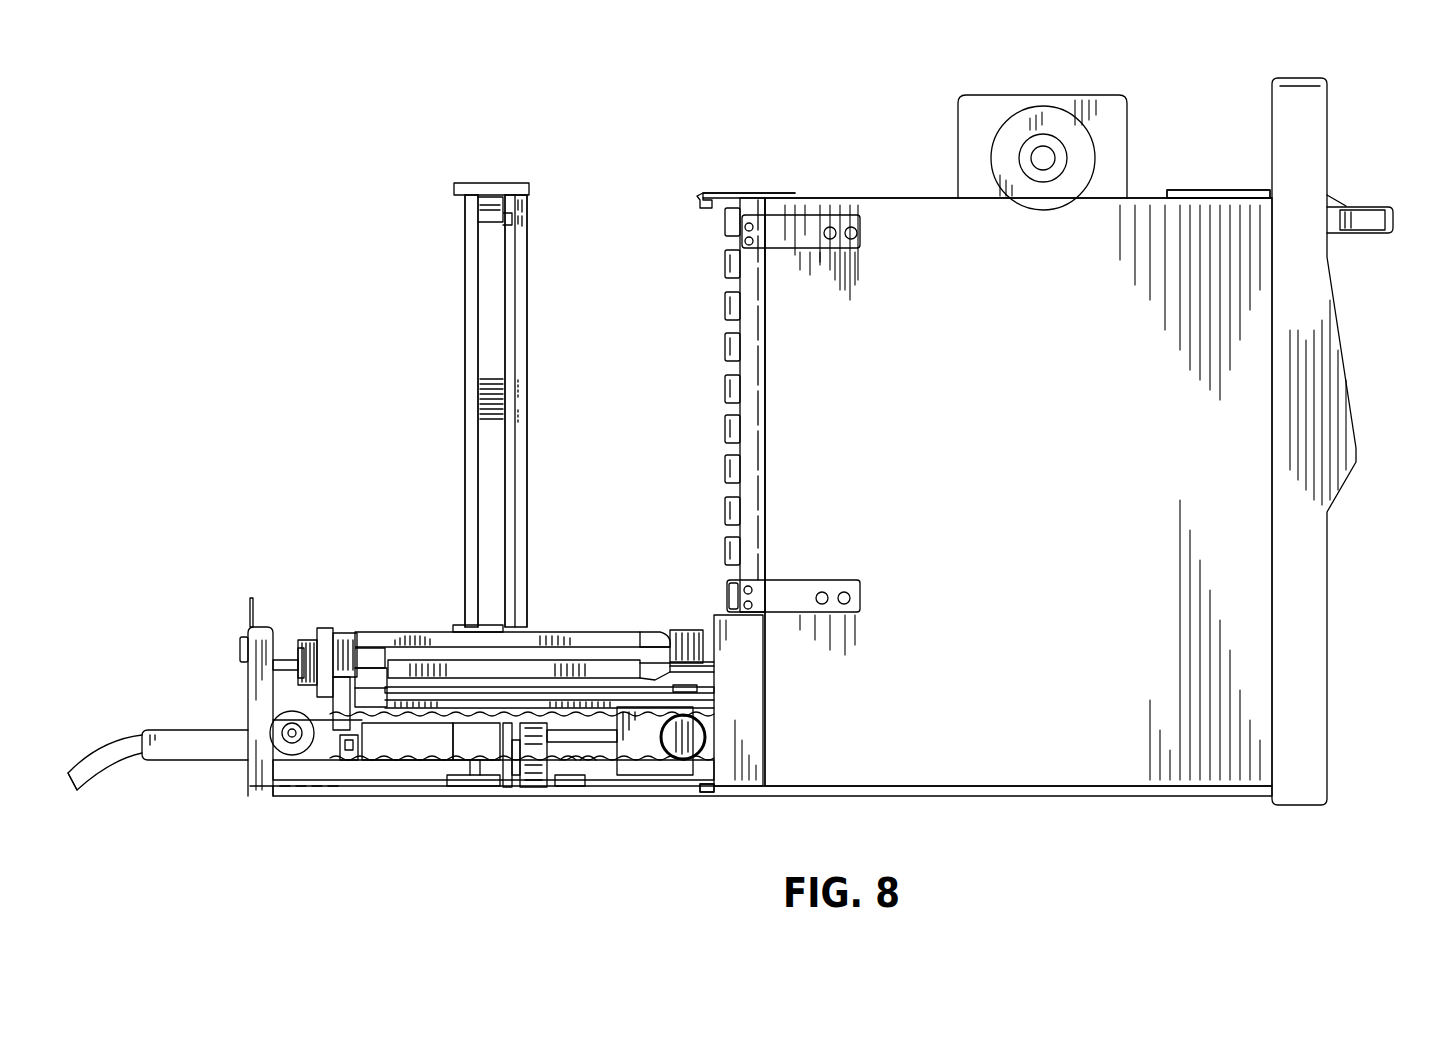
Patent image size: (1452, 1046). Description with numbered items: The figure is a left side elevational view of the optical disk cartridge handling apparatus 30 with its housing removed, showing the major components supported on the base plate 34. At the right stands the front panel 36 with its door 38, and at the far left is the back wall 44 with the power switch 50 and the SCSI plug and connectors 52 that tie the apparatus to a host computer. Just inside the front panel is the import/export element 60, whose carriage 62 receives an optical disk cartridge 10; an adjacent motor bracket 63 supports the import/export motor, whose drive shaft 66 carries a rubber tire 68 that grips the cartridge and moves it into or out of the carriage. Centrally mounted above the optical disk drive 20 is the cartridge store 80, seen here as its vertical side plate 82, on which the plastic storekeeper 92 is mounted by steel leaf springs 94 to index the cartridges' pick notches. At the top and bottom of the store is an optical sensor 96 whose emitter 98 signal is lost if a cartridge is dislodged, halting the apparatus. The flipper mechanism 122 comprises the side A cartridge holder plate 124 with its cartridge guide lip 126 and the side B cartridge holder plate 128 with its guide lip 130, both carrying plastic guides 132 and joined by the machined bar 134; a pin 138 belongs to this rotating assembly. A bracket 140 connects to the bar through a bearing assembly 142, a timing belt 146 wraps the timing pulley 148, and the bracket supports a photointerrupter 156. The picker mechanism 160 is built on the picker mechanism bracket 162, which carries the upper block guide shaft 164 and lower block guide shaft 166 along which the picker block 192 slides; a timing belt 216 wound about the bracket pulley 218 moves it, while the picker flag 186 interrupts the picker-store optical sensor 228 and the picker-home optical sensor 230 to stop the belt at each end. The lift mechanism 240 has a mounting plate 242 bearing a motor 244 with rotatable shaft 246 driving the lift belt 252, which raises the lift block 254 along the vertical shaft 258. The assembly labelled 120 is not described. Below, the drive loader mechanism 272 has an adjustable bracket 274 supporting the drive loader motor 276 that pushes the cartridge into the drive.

The optical disk cartridge 10 is at (1380, 213).
The optical disk drive 20 is at (740, 780).
The optical disk cartridge handling apparatus 30 is at (987, 113).
The base plate 34 is at (1050, 786).
The front panel 36 is at (1343, 418).
The door 38 is at (1333, 207).
The back wall 44 is at (245, 720).
The power switch 50 is at (240, 645).
The SCSI plug and connectors 52 is at (233, 757).
The import/export element 60 is at (1213, 190).
The carriage 62 is at (1218, 194).
The motor bracket 63 is at (1105, 103).
The drive shaft 66 is at (1047, 153).
The rubber tire 68 is at (1030, 117).
The cartridge store 80 is at (780, 345).
The vertical side plate 82 is at (1029, 459).
The storekeeper 92 is at (750, 210).
The steel leaf springs 94 is at (795, 225).
The optical sensor 96 is at (700, 205).
The emitter 98 is at (707, 788).
The carriage assembly 120 is at (317, 556).
The flipper mechanism 122 is at (497, 590).
The side A cartridge holder plate 124 is at (640, 636).
The cartridge guide lip 126 is at (660, 632).
The side B cartridge holder plate 128 is at (370, 672).
The cartridge guide lip 130 is at (662, 660).
The plastic guides 132 is at (528, 633).
The machined bar 134 is at (380, 665).
The pin 138 is at (345, 660).
The bracket 140 is at (328, 630).
The bearing assembly 142 is at (335, 665).
The timing belt 146 is at (310, 640).
The timing pulley 148 is at (298, 655).
The photointerrupter 156 is at (340, 635).
The picker mechanism 160 is at (345, 690).
The picker mechanism bracket 162 is at (688, 630).
The upper block guide shaft 164 is at (710, 650).
The lower block guide shaft 166 is at (700, 686).
The picker flag 186 is at (365, 728).
The picker block 192 is at (283, 748).
The timing belt 216 is at (420, 765).
The bracket pulley 218 is at (268, 790).
The picker-store optical sensor 228 is at (690, 678).
The picker-home optical sensor 230 is at (352, 760).
The lift mechanism 240 is at (467, 382).
The mounting plate 242 is at (528, 485).
The motor 244 is at (575, 780).
The rotatable shaft 246 is at (512, 780).
The lift belt 252 is at (490, 463).
The lift block 254 is at (475, 783).
The vertical shaft 258 is at (470, 520).
The drive loader mechanism 272 is at (640, 770).
The adjustable bracket 274 is at (605, 790).
The drive loader motor 276 is at (682, 760).